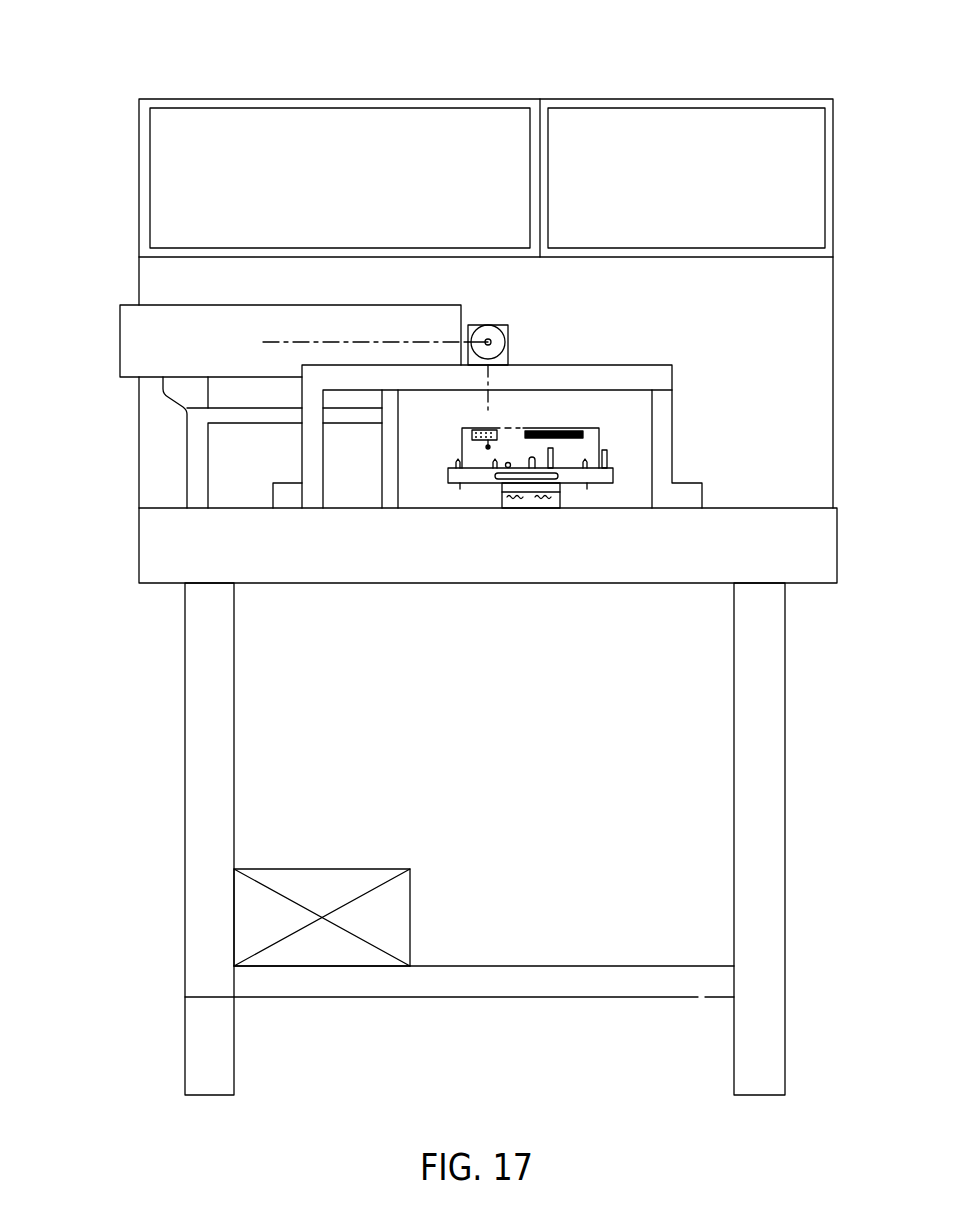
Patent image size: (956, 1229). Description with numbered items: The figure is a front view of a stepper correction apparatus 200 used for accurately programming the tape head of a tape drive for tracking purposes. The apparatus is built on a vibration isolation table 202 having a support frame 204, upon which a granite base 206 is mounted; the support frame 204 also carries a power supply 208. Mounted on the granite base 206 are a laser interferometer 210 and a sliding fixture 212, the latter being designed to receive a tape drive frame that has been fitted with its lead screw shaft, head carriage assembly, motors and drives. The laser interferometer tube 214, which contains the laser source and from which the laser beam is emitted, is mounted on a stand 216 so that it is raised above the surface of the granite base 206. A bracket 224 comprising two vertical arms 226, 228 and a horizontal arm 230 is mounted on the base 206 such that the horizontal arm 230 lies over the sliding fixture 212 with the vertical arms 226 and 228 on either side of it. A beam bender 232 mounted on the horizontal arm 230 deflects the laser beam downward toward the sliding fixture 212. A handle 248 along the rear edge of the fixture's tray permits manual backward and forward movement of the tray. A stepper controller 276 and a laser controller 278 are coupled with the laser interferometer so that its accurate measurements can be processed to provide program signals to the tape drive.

The stepper correction apparatus 200 is at (80, 76).
The vibration isolation table 202 is at (775, 830).
The support frame 204 is at (775, 688).
The granite base 206 is at (820, 543).
The power supply 208 is at (365, 876).
The laser interferometer 210 is at (118, 286).
The sliding fixture 212 is at (583, 477).
The laser interferometer tube 214 is at (293, 316).
The stand 216 is at (192, 447).
The bracket 224 is at (661, 360).
The vertical arm 226 is at (305, 457).
The vertical arm 228 is at (660, 412).
The horizontal arm 230 is at (597, 365).
The beam bender 232 is at (489, 325).
The handle 248 is at (530, 483).
The stepper controller 276 is at (313, 120).
The laser controller 278 is at (660, 118).